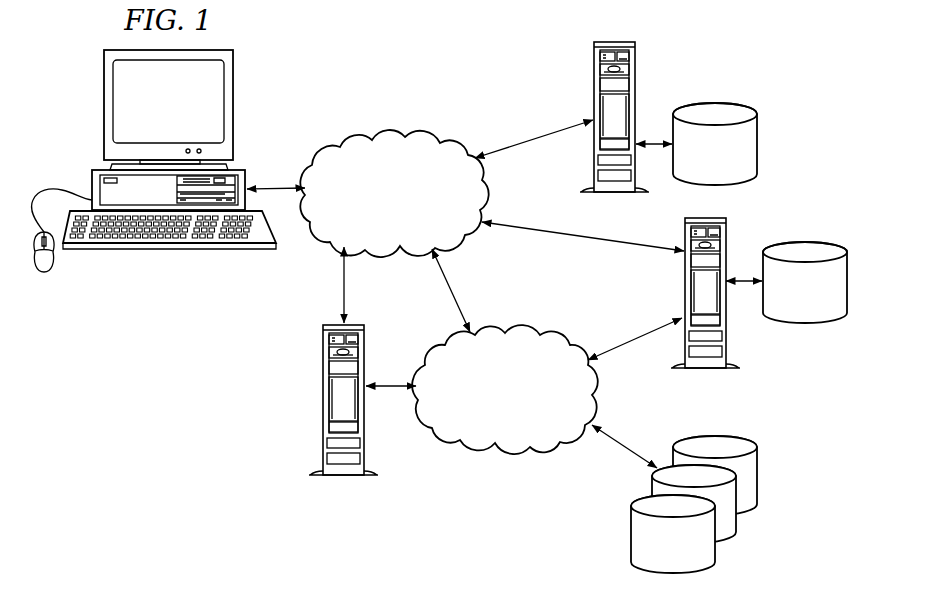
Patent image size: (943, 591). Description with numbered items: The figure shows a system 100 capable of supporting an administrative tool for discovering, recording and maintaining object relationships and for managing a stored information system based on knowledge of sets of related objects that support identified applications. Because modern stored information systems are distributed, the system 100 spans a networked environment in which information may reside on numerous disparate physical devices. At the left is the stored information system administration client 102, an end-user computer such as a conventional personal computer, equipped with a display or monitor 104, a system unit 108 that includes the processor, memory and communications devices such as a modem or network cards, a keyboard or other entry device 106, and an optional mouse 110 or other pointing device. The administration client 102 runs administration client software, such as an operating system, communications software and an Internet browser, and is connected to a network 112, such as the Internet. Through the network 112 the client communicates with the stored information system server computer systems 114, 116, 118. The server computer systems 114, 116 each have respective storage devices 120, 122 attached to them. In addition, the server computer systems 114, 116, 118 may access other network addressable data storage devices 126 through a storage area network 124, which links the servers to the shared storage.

The system 100 is at (391, 100).
The stored information system administration client 102 is at (92, 180).
The display or monitor 104 is at (105, 104).
The keyboard or other entry device 106 is at (137, 250).
The system unit 108 is at (237, 183).
The mouse 110 is at (44, 276).
The network 112 is at (380, 222).
The stored information system server computer system 114 is at (636, 72).
The stored information system server computer system 116 is at (685, 289).
The stored information system server computer system 118 is at (323, 396).
The storage device 120 is at (760, 134).
The storage device 122 is at (808, 325).
The storage area network 124 is at (535, 447).
The network addressable data storage devices 126 is at (762, 476).